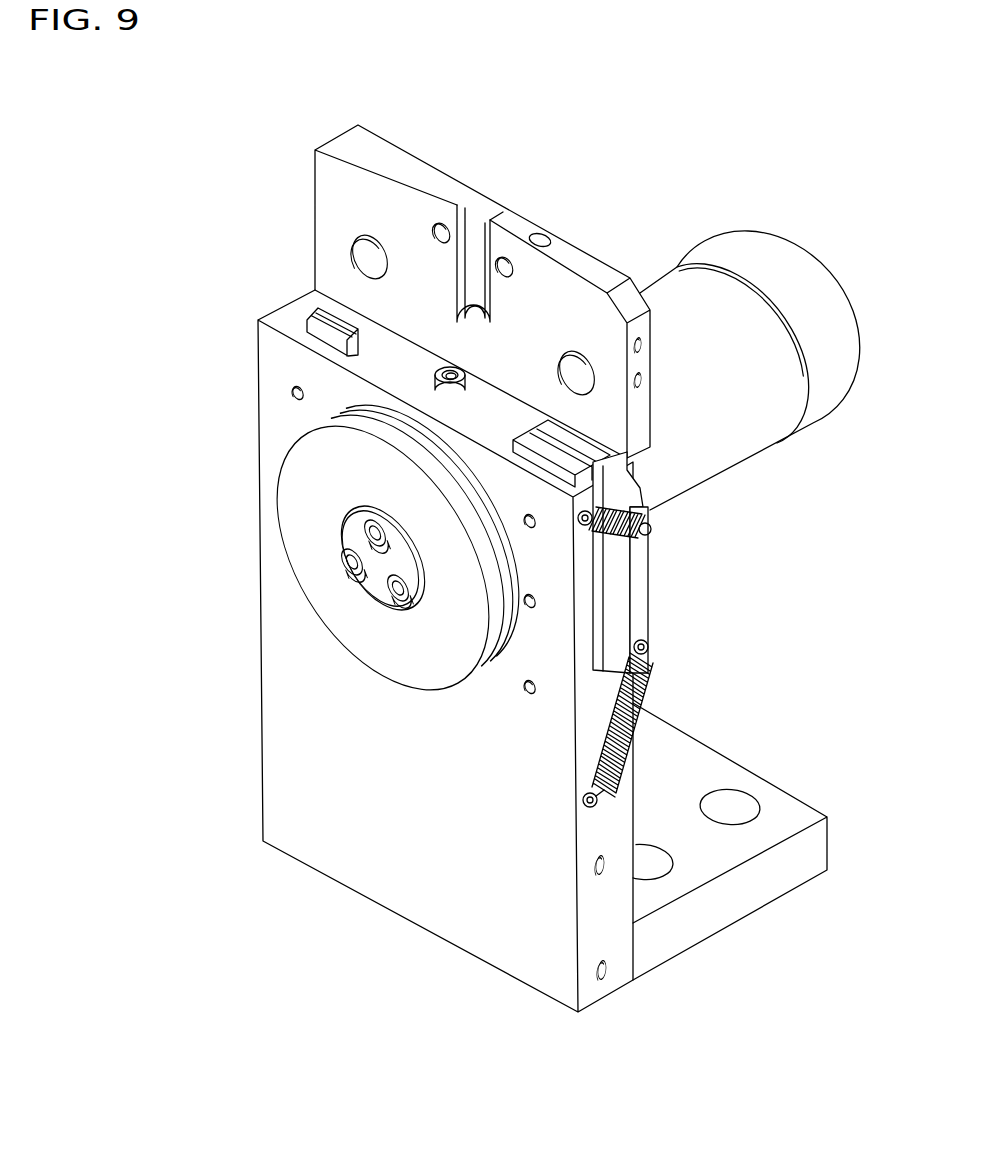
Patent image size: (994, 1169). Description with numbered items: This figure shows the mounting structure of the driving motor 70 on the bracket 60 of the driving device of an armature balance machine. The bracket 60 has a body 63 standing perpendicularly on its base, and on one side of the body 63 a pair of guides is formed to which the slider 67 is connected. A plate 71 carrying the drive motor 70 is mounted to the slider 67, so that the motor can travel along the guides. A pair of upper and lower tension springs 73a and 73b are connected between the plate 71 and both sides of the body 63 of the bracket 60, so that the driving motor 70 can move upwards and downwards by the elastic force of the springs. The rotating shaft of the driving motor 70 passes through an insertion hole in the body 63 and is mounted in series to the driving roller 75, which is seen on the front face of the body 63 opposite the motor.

The bracket 60 is at (180, 777).
The body 63 is at (285, 643).
The slider 67 is at (613, 563).
The driving motor 70 is at (780, 257).
The plate 71 is at (640, 602).
The upper tension spring 73a is at (650, 512).
The lower tension spring 73b is at (640, 688).
The driving roller 75 is at (303, 531).